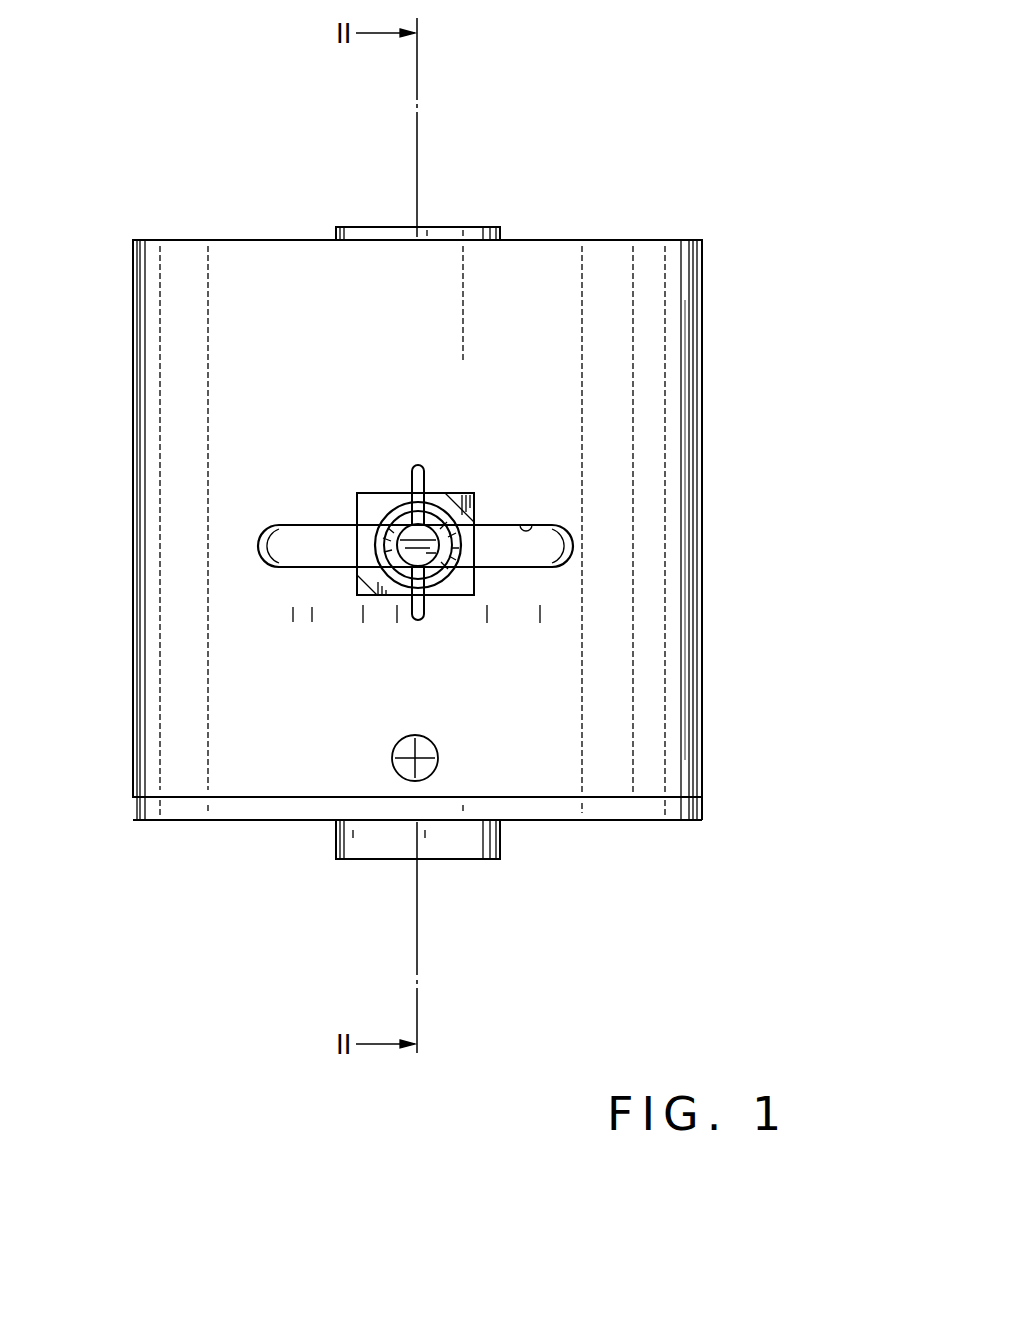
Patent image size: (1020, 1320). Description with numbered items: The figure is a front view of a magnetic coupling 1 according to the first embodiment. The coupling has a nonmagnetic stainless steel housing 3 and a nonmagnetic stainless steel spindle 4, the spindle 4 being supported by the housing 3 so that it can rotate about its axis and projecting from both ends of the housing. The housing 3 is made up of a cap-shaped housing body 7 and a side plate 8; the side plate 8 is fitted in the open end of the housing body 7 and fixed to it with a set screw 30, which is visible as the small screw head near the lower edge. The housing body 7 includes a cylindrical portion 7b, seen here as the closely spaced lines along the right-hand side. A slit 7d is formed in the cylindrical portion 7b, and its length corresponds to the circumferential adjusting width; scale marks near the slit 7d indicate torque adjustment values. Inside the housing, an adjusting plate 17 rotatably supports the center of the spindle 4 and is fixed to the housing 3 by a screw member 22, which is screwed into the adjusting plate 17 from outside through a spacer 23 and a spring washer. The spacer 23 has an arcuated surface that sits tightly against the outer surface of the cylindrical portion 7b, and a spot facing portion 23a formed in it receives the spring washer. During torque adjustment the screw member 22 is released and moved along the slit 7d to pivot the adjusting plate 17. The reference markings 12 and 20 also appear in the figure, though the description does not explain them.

The magnetic coupling 1 is at (603, 220).
The housing 3 is at (126, 389).
The spindle 4 is at (530, 856).
The housing body 7 is at (712, 408).
The cylindrical portion 7b is at (685, 470).
The slit 7d is at (532, 522).
The side plate 8 is at (690, 806).
The valve body 12 is at (388, 630).
The adjusting plate 17 is at (305, 538).
The stem 20 is at (521, 630).
The screw member 22 is at (460, 505).
The spacer 23 is at (368, 493).
The spot facing portion 23a is at (402, 492).
The set screw 30 is at (432, 740).